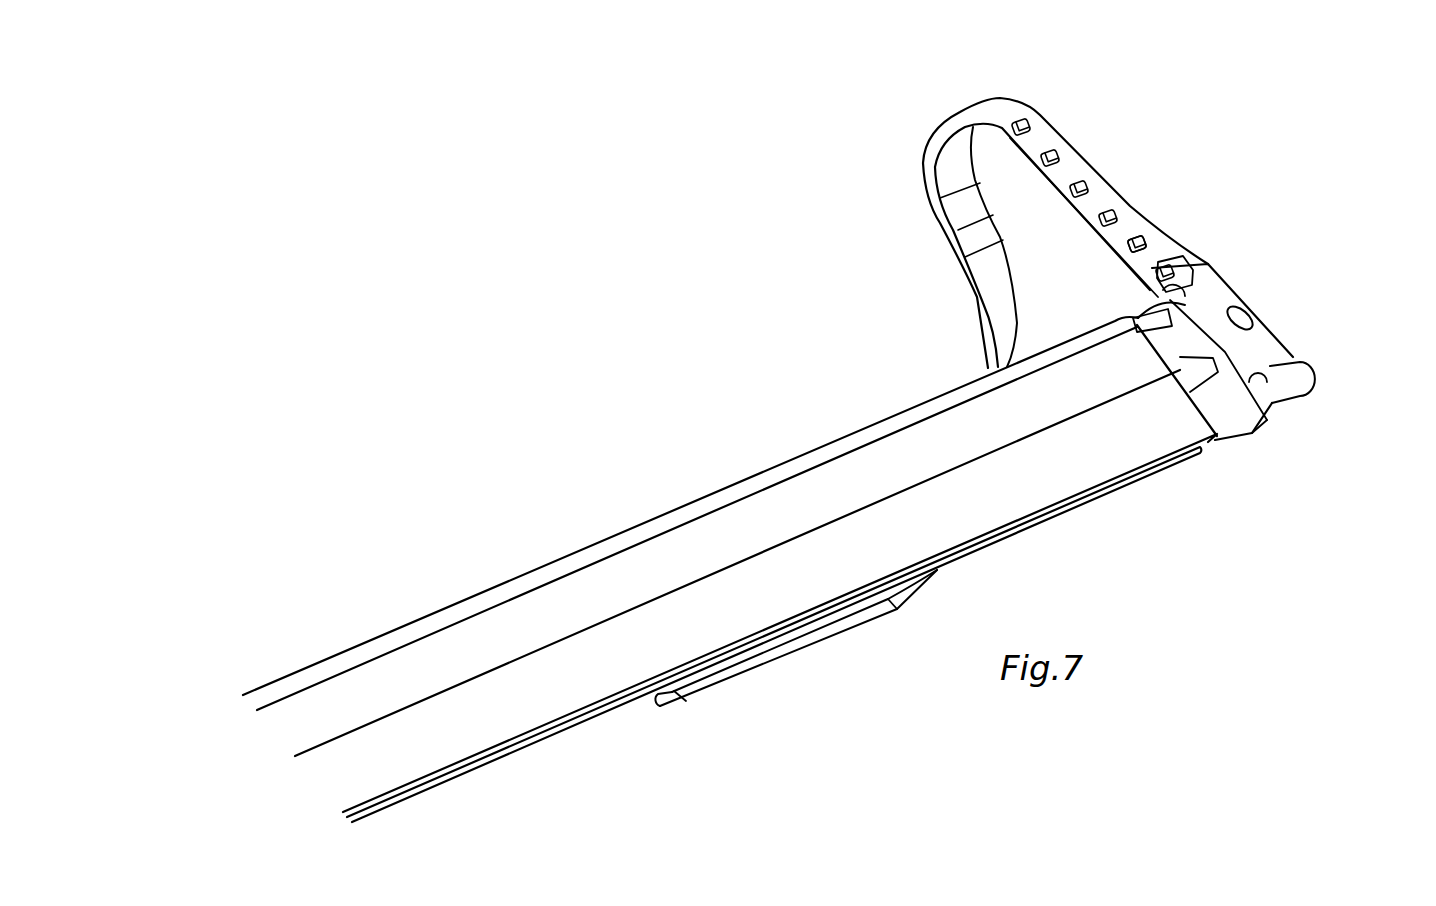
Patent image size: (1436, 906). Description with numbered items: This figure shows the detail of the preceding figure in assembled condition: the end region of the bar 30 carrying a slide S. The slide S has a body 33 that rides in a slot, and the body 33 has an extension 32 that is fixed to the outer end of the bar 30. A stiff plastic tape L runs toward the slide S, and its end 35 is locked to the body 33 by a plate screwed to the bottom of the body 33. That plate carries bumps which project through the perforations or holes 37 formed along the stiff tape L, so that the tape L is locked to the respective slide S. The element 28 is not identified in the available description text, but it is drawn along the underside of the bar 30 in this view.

The stiff plastic tape L is at (1091, 146).
The lower channel strip 28 is at (795, 663).
The bar 30 is at (1186, 478).
The extension 32 is at (1188, 342).
The body 33 is at (1298, 351).
The end of stiff plastic tape 35 is at (1192, 262).
The perforations or holes 37 is at (1146, 243).
The slide S is at (1276, 278).